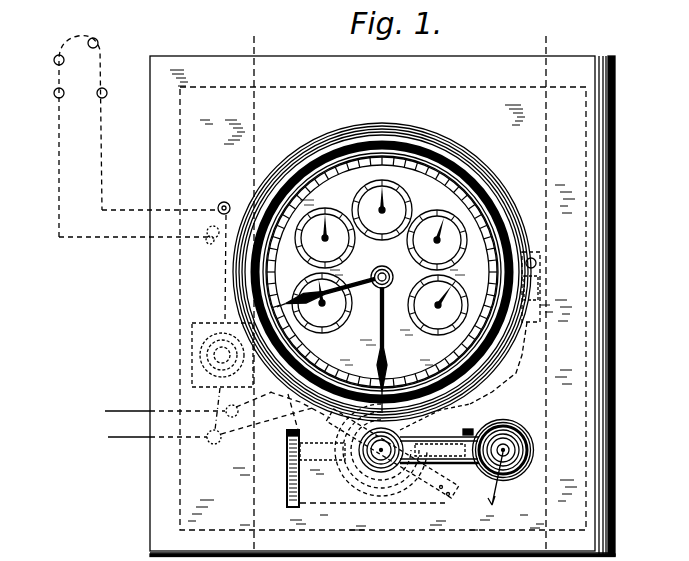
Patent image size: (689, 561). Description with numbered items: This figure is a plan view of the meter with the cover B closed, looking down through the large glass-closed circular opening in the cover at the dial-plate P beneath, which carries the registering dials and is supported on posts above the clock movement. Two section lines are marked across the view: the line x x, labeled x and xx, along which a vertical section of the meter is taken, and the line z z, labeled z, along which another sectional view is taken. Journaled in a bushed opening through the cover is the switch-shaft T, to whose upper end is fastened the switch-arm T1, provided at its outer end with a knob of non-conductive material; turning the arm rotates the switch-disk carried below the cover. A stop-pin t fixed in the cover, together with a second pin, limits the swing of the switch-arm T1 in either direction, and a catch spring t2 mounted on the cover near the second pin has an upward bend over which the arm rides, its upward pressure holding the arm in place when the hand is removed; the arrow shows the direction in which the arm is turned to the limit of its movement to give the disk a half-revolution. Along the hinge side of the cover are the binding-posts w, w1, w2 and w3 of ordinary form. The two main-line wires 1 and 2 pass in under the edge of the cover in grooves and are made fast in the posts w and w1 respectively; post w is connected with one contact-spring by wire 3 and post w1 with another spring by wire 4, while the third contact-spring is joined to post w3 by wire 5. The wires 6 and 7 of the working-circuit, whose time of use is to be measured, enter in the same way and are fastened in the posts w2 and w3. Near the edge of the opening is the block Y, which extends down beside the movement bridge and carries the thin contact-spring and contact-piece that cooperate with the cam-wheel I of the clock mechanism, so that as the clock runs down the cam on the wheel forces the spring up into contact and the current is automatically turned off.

The main-line wire 1 is at (157, 444).
The main-line wire 2 is at (165, 418).
The wire 3 is at (266, 426).
The wire 4 is at (243, 322).
The wire 5 is at (357, 450).
The working-circuit wire 6 is at (133, 245).
The working-circuit wire 7 is at (160, 218).
The cover B is at (382, 306).
The section line z is at (250, 287).
The section line x is at (545, 287).
The section line xx is at (76, 136).
The dial-plate P is at (382, 272).
The cam-wheel I is at (222, 355).
The block Y is at (514, 328).
The switch-shaft T is at (381, 450).
The switch-arm T1 is at (467, 463).
The stop-pin t is at (389, 450).
The catch spring t2 is at (287, 478).
The binding-post w is at (218, 443).
The binding-post w1 is at (236, 406).
The binding-post w2 is at (207, 238).
The binding-post w3 is at (230, 203).